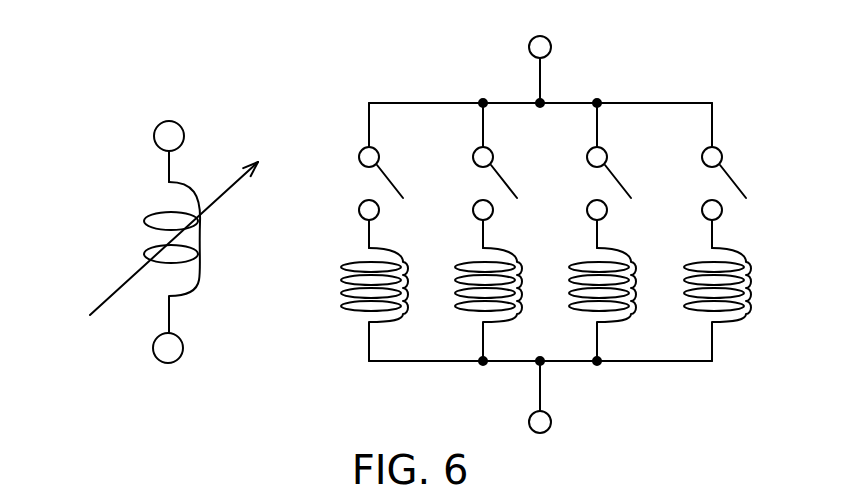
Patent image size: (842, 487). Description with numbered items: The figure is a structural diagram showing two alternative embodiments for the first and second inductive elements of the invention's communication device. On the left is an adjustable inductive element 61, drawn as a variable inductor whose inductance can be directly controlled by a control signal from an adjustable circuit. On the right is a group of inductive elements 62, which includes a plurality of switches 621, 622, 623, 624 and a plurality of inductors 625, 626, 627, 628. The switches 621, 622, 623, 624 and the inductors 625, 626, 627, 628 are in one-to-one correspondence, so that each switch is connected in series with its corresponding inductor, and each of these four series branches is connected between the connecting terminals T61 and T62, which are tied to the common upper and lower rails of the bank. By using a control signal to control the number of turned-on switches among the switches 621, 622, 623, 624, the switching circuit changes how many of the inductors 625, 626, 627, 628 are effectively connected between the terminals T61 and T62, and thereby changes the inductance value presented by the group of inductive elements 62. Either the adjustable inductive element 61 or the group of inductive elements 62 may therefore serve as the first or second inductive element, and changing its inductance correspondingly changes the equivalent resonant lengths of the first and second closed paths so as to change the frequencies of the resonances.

The adjustable inductive element 61 is at (128, 95).
The group of inductive elements 62 is at (375, 75).
The connecting terminal T61 is at (542, 80).
The connecting terminal T62 is at (541, 400).
The switch 621 is at (363, 175).
The switch 622 is at (478, 175).
The switch 623 is at (592, 175).
The switch 624 is at (707, 175).
The inductor 625 is at (353, 304).
The inductor 626 is at (466, 304).
The inductor 627 is at (580, 304).
The inductor 628 is at (695, 304).